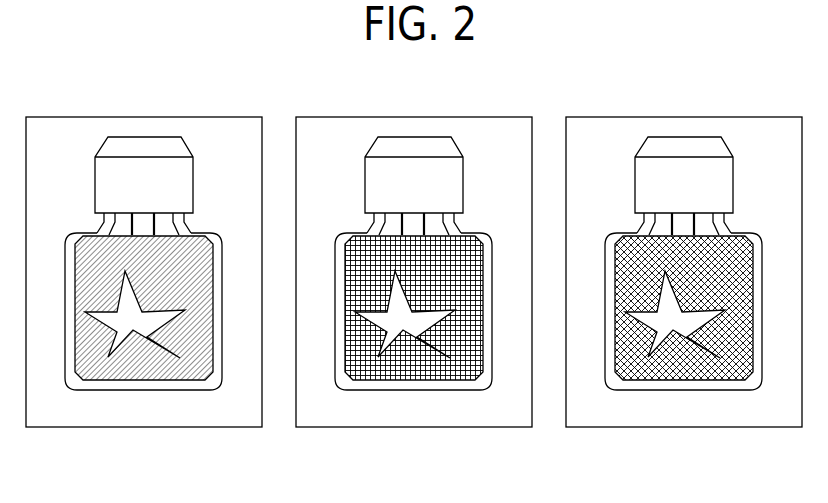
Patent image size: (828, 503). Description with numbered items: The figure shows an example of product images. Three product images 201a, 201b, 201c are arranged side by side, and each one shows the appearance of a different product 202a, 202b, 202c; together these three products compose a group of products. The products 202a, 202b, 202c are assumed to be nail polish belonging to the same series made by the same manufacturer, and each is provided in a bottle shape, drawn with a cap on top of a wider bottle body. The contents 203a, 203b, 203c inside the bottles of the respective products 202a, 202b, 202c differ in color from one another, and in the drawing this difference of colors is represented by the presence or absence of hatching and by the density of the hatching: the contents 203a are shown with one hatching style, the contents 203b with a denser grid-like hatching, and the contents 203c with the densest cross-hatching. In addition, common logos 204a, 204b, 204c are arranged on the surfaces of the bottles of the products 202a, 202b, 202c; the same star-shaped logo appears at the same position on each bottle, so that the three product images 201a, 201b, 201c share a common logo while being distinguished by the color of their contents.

The product image 201a is at (112, 117).
The product 202a is at (165, 137).
The contents 203a is at (192, 367).
The common logo 204a is at (120, 343).
The product image 201b is at (414, 243).
The product 202b is at (433, 153).
The contents 203b is at (418, 362).
The common logo 204b is at (414, 363).
The product image 201c is at (684, 243).
The product 202c is at (703, 153).
The contents 203c is at (688, 362).
The common logo 204c is at (684, 363).